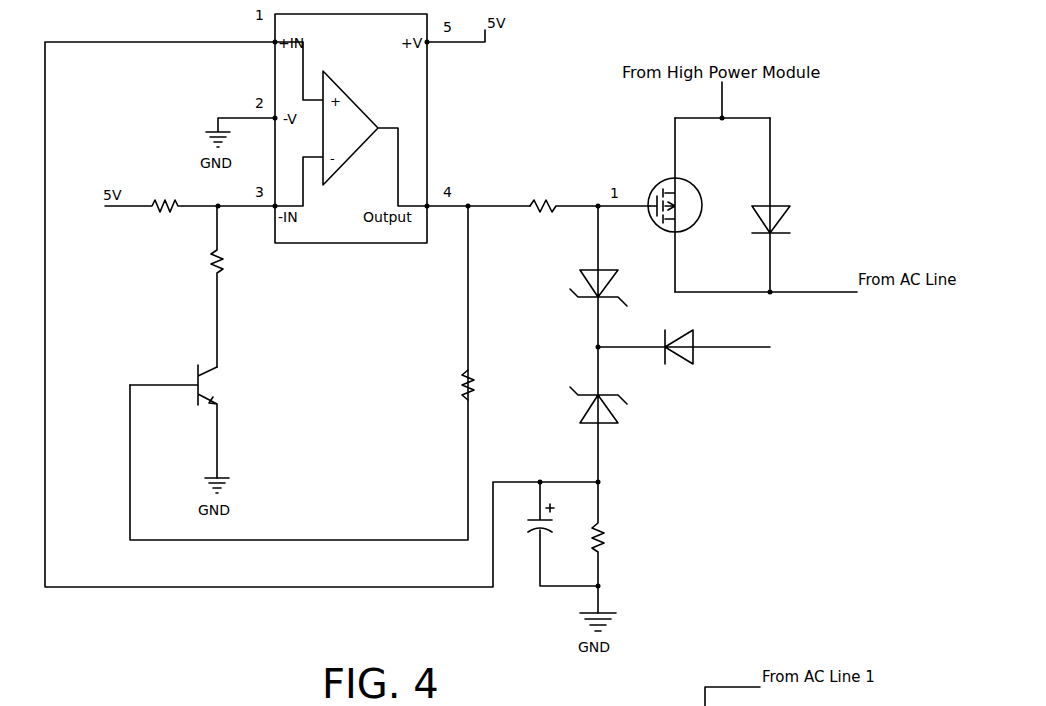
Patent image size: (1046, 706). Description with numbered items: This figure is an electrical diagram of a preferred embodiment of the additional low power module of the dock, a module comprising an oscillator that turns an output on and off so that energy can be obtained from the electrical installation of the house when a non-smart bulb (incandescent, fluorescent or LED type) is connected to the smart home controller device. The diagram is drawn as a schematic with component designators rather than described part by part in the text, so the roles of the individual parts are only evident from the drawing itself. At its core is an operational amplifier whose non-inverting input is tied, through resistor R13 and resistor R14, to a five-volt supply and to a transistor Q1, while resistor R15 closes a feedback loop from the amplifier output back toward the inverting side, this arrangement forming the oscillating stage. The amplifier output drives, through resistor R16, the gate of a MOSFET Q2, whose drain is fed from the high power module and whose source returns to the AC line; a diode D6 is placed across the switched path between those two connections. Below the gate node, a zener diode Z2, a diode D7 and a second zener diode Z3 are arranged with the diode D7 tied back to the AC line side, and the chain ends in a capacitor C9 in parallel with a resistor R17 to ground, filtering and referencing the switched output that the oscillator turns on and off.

The resistor R13 is at (161, 196).
The resistor R14 is at (234, 286).
The resistor R15 is at (484, 385).
The resistor R16 is at (563, 215).
The resistor R17 is at (614, 547).
The transistor Q1 is at (191, 402).
The MOSFET Q2 is at (686, 205).
The zener diode Z2 is at (607, 276).
The zener diode Z3 is at (608, 414).
The diode D6 is at (784, 205).
The diode D7 is at (684, 352).
The capacitor C9 is at (563, 534).